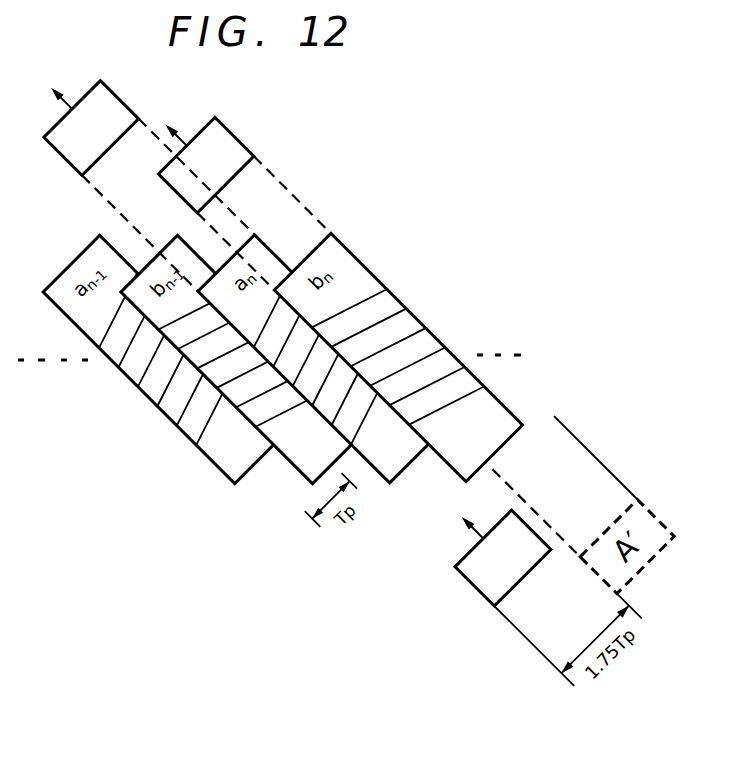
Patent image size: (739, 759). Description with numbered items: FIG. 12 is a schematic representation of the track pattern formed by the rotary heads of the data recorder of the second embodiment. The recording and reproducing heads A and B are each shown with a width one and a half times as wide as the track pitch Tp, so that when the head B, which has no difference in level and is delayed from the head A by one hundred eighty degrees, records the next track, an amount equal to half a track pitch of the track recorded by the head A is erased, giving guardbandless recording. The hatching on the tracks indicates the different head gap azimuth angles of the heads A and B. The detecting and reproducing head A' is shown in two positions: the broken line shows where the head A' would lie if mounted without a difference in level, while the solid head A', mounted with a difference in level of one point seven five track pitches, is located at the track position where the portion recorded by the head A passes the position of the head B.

The recording and reproducing rotary head A is at (139, 175).
The recording and reproducing rotary head B is at (234, 193).
The detecting and reproducing rotary head A' is at (491, 547).